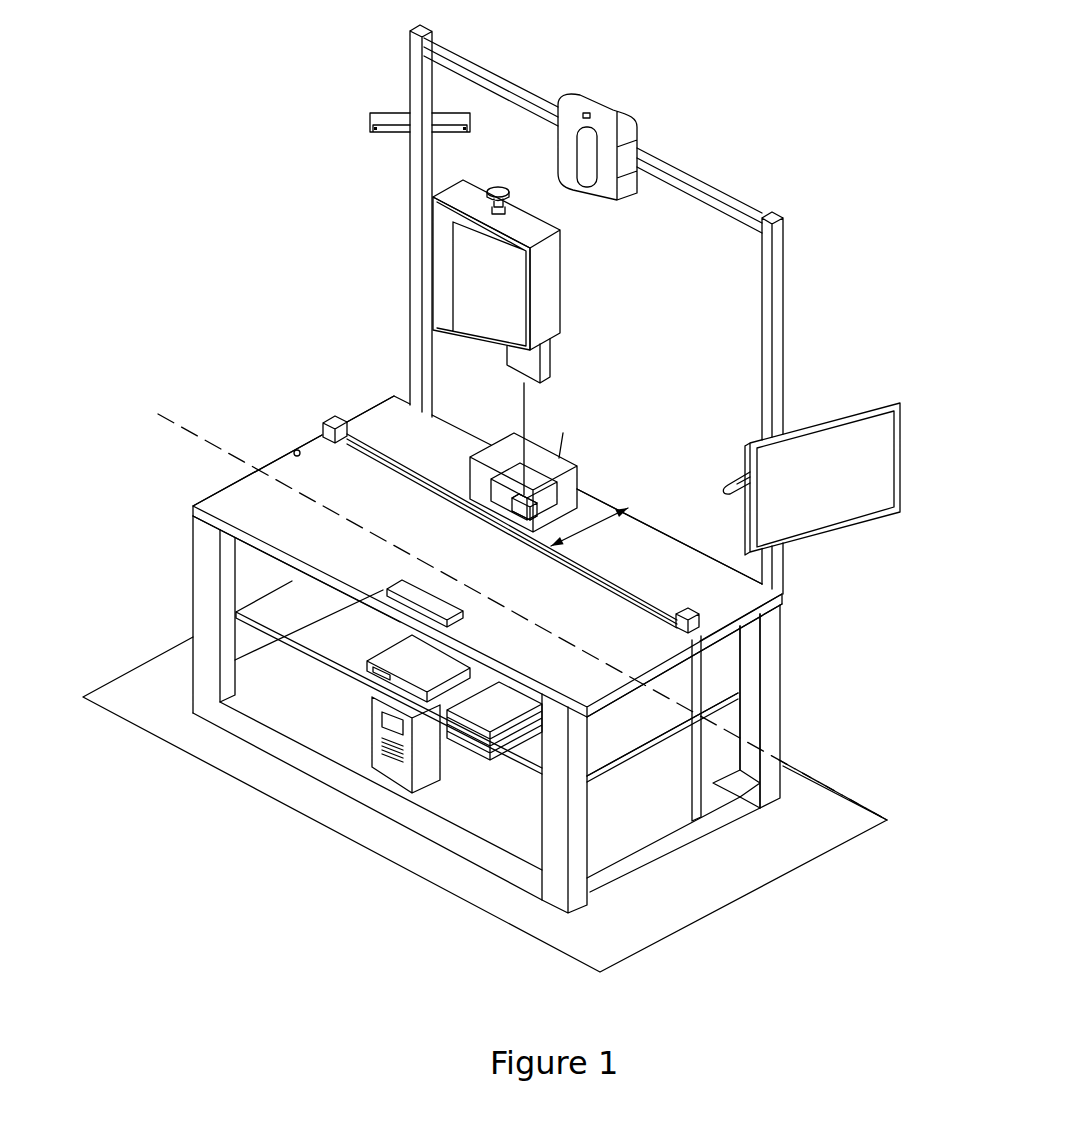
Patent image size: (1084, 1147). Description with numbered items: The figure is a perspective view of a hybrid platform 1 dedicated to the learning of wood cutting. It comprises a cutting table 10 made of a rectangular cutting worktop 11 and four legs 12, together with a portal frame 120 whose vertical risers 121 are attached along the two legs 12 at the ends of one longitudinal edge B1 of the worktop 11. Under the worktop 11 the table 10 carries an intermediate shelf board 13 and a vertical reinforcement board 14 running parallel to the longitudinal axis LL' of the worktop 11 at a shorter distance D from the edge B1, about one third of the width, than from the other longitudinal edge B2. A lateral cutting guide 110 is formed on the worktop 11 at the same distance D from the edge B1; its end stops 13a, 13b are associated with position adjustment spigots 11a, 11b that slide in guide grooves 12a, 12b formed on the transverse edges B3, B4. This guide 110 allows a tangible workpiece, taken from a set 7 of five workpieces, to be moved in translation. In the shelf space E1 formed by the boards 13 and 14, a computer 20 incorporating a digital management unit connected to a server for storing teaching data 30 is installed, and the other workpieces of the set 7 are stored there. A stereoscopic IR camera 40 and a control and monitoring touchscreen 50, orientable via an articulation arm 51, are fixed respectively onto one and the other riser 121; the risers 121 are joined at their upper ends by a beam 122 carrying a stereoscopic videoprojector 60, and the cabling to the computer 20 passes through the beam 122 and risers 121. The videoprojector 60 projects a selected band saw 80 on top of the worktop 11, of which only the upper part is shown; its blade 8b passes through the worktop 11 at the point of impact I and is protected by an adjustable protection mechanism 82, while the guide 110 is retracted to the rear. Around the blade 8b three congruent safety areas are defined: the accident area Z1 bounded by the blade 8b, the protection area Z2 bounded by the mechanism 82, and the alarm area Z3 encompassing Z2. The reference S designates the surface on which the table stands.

The hybrid platform 1 is at (318, 88).
The set of workpieces 7 is at (492, 748).
The blade 8b is at (527, 415).
The cutting table 10 is at (270, 463).
The cutting worktop 11 is at (620, 578).
The position adjustment spigot 11a is at (322, 436).
The position adjustment spigot 11b is at (742, 640).
The lateral cutting guide 110 is at (700, 590).
The legs 12 is at (200, 620).
The guide groove 12a is at (308, 440).
The guide groove 12b is at (748, 612).
The intermediate shelf board 13 is at (622, 757).
The end stop 13a is at (332, 418).
The end stop 13b is at (690, 606).
The vertical reinforcement board 14 is at (703, 705).
The computer 20 is at (385, 767).
The server for storing teaching data 30 is at (345, 737).
The stereoscopic IR camera 40 is at (370, 122).
The control and monitoring touchscreen 50 is at (862, 408).
The articulation arm 51 is at (737, 475).
The stereoscopic videoprojector 60 is at (606, 108).
The band saw 80 is at (570, 264).
The protection mechanism 82 is at (550, 362).
The portal frame 120 is at (773, 191).
The vertical risers 121 is at (412, 75).
The beam 122 is at (688, 176).
The longitudinal edge B1 is at (570, 470).
The longitudinal edge B2 is at (273, 548).
The transverse edge B3 is at (300, 452).
The transverse edge B4 is at (627, 635).
The distance D is at (592, 527).
The shelf space E1 is at (363, 667).
The point of impact I is at (562, 434).
The longitudinal axis end L is at (508, 610).
The longitudinal axis end L' is at (847, 796).
The floor surface S is at (735, 872).
The accident area Z1 is at (527, 496).
The protection area Z2 is at (523, 493).
The alarm area Z3 is at (525, 497).